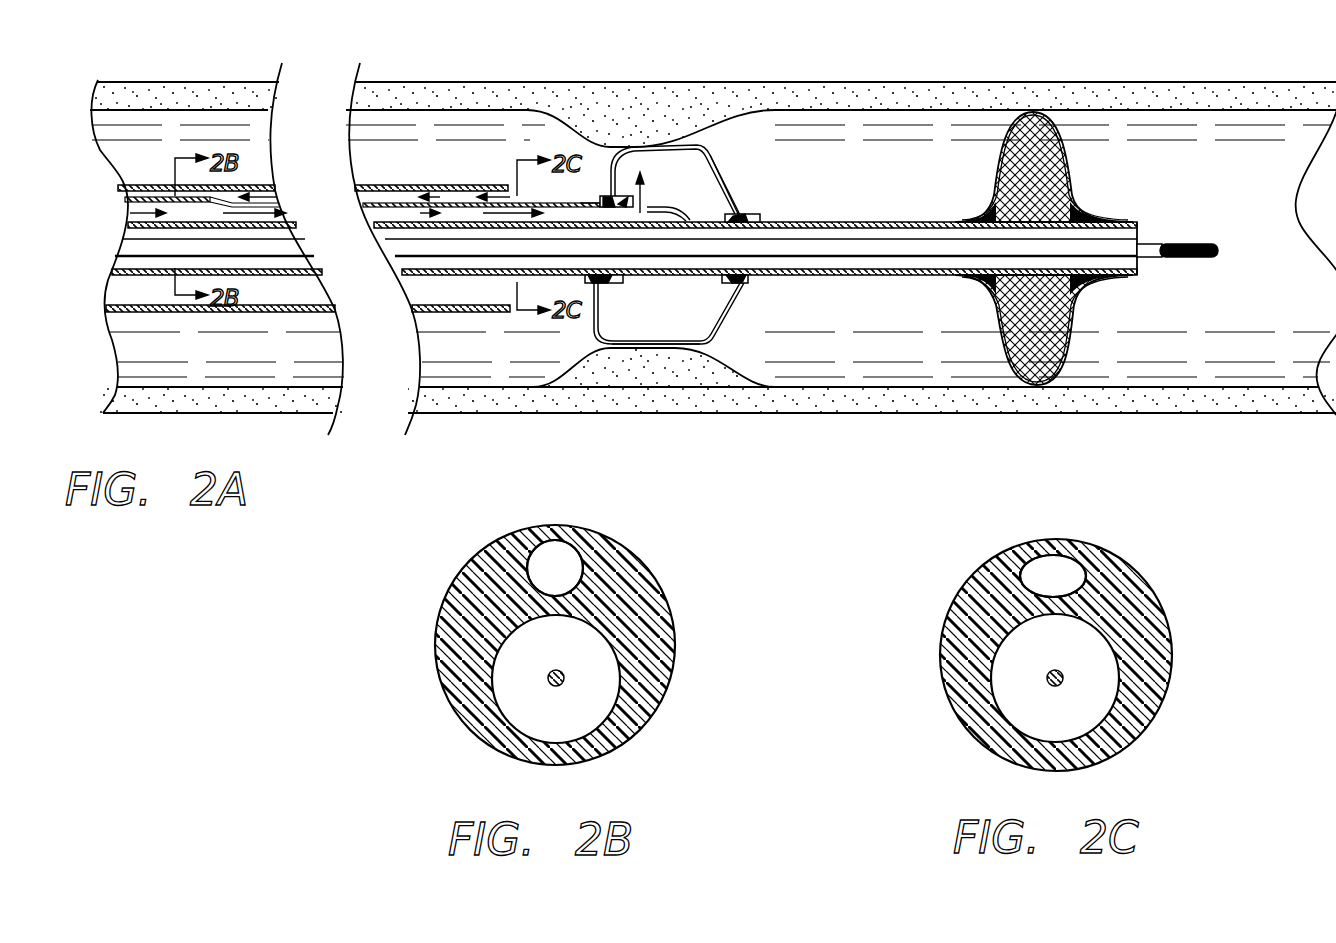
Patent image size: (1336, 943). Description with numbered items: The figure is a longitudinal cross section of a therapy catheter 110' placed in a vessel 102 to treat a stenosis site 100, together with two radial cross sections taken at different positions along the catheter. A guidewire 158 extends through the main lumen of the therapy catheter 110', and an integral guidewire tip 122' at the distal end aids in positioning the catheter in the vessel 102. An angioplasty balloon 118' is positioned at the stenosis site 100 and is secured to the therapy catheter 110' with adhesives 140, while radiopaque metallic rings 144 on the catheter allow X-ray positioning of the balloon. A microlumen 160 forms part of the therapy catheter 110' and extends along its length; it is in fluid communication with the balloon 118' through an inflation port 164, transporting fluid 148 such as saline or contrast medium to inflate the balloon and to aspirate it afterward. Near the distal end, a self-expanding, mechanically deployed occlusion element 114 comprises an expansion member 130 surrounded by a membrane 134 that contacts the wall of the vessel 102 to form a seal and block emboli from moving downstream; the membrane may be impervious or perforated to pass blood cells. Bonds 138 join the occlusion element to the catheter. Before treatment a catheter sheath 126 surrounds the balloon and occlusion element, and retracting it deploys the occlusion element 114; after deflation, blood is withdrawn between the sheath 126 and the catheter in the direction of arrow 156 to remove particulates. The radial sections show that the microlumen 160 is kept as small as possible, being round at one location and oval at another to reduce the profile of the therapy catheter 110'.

In FIG. 2A, the stenosis site 100 is at (630, 400).
In FIG. 2A, the vessel 102 is at (850, 413).
In FIG. 2A, the therapy catheter 110' is at (624, 215).
In FIG. 2B, the therapy catheter 110' is at (597, 645).
In FIG. 2C, the therapy catheter 110' is at (1096, 655).
In FIG. 2A, the occlusion element 114 is at (1055, 248).
In FIG. 2A, the angioplasty balloon 118' is at (756, 184).
In FIG. 2A, the guidewire tip 122' is at (1220, 268).
In FIG. 2A, the catheter sheath 126 is at (412, 186).
In FIG. 2A, the expansion member 130 is at (1052, 194).
In FIG. 2A, the membrane 134 is at (1000, 167).
In FIG. 2A, the balloon bond fillet 138 is at (988, 216).
In FIG. 2A, the adhesives 140 is at (627, 148).
In FIG. 2A, the radiopaque metallic rings 144 is at (728, 300).
In FIG. 2A, the fluid 148 is at (405, 222).
In FIG. 2A, the arrow 156 is at (543, 186).
In FIG. 2A, the guidewire 158 is at (1148, 253).
In FIG. 2B, the guidewire 158 is at (553, 685).
In FIG. 2C, the guidewire 158 is at (1050, 685).
In FIG. 2A, the microlumen 160 is at (580, 203).
In FIG. 2B, the microlumen 160 is at (556, 565).
In FIG. 2C, the microlumen 160 is at (1052, 572).
In FIG. 2A, the inflation port 164 is at (649, 203).